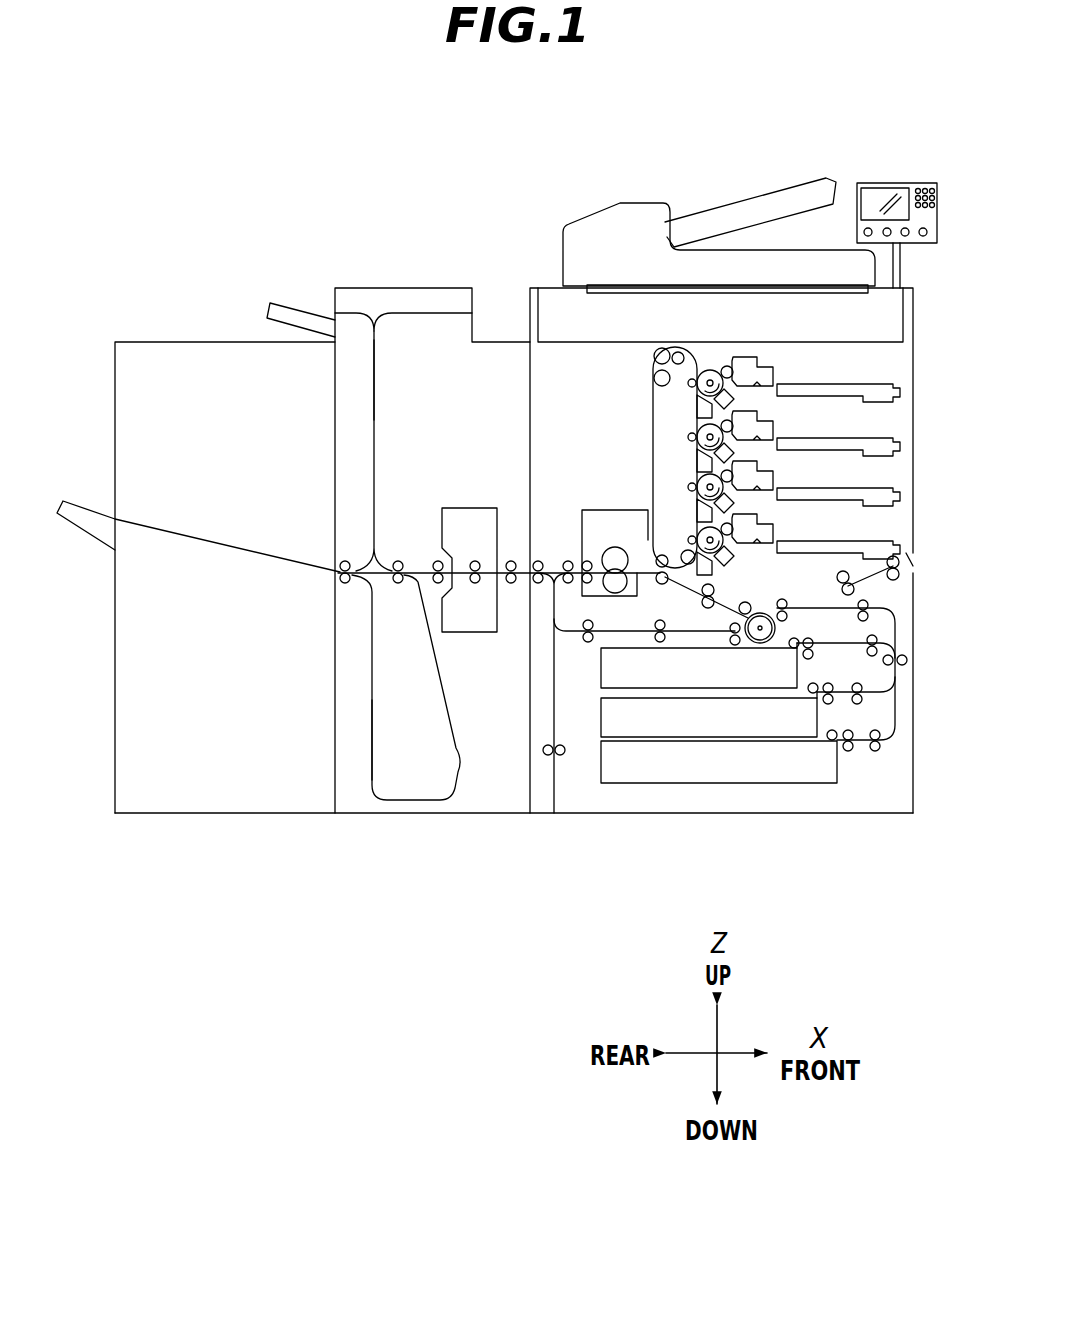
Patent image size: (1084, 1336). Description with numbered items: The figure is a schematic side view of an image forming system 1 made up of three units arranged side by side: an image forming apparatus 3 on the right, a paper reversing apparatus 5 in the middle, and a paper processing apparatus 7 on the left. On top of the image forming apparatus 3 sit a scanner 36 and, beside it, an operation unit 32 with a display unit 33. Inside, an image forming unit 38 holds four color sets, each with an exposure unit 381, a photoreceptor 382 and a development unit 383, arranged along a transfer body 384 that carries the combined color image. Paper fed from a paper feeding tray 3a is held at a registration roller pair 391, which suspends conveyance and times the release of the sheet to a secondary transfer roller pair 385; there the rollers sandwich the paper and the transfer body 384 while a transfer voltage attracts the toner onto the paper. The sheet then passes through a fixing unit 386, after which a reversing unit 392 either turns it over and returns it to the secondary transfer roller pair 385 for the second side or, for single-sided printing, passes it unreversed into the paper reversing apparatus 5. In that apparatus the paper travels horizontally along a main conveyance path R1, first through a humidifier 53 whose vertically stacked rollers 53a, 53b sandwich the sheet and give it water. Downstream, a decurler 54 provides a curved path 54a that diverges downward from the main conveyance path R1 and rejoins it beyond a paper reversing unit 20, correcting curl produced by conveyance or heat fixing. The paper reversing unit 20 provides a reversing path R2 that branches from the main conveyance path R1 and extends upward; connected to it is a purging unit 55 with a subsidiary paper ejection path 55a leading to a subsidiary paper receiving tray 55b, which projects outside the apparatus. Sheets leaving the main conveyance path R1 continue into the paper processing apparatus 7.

The image forming system 1 is at (847, 121).
The image forming apparatus 3 is at (730, 813).
The paper feeding tray 3a is at (667, 793).
The paper reversing apparatus 5 is at (478, 815).
The paper processing apparatus 7 is at (181, 342).
The paper reversing unit 20 is at (370, 473).
The operation unit 32 is at (908, 212).
The display unit 33 is at (874, 195).
The scanner 36 is at (553, 293).
The image forming unit 38 is at (542, 398).
The humidifier 53 is at (474, 531).
The roller 53a is at (474, 561).
The roller 53b is at (475, 584).
The decurler 54 is at (368, 735).
The curved path 54a is at (371, 757).
The purging unit 55 is at (369, 258).
The subsidiary paper ejection path 55a is at (352, 313).
The subsidiary paper receiving tray 55b is at (303, 307).
The exposure unit 381 is at (904, 446).
The photoreceptor 382 is at (696, 437).
The development unit 383 is at (779, 430).
The transfer body 384 is at (654, 396).
The secondary transfer roller pair 385 is at (660, 590).
The fixing unit 386 is at (592, 510).
The registration roller pair 391 is at (713, 606).
The reversing unit 392 is at (562, 656).
The main conveyance path R1 is at (418, 565).
The reversing path R2 is at (379, 359).